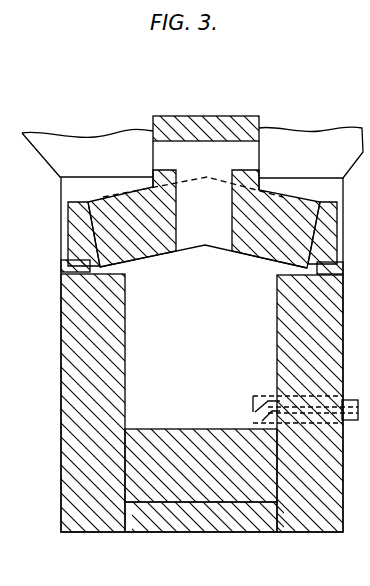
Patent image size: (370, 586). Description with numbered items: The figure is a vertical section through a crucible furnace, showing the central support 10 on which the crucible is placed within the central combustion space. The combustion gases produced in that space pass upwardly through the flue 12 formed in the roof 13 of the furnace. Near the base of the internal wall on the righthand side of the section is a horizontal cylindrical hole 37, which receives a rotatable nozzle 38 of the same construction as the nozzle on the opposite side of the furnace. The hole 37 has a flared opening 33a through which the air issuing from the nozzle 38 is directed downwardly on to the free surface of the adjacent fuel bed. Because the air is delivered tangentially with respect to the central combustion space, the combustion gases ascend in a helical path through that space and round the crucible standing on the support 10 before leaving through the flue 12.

The central support 10 is at (172, 453).
The flue 12 is at (217, 157).
The roof 13 is at (123, 213).
The flared opening 33a is at (253, 423).
The cylindrical hole 37 is at (263, 393).
The rotatable nozzle 38 is at (352, 399).